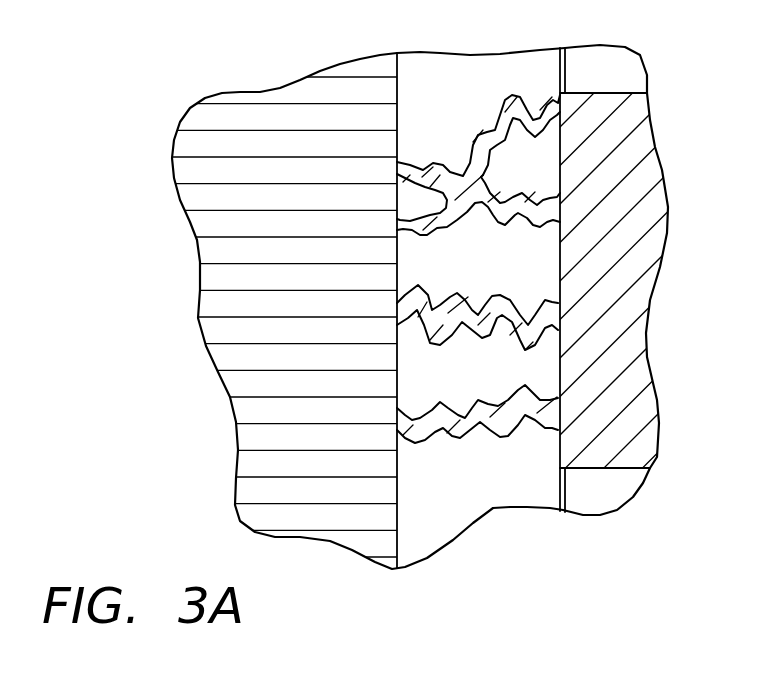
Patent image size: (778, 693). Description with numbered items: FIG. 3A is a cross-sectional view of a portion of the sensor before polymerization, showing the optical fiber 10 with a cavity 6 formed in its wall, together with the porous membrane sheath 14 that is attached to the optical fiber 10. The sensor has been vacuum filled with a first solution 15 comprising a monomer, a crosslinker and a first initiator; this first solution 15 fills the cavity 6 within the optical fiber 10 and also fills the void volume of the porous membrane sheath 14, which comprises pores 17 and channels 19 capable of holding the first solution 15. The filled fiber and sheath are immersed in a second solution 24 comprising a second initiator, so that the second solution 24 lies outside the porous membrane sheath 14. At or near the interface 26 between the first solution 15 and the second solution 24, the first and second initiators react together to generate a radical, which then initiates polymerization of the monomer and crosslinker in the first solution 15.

The cavity 6 is at (612, 138).
The optical fiber 10 is at (612, 65).
The porous membrane sheath 14 is at (447, 380).
The first solution 15 is at (618, 226).
The pores 17 is at (407, 167).
The channels 19 is at (478, 404).
The second solution 24 is at (275, 263).
The interface 26 is at (395, 421).